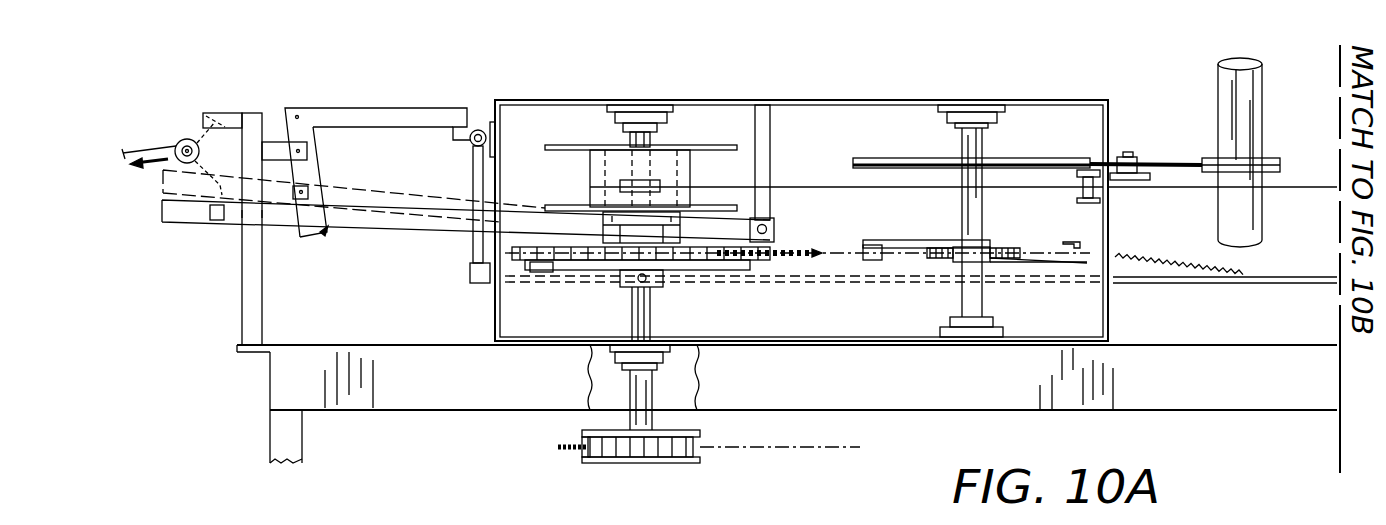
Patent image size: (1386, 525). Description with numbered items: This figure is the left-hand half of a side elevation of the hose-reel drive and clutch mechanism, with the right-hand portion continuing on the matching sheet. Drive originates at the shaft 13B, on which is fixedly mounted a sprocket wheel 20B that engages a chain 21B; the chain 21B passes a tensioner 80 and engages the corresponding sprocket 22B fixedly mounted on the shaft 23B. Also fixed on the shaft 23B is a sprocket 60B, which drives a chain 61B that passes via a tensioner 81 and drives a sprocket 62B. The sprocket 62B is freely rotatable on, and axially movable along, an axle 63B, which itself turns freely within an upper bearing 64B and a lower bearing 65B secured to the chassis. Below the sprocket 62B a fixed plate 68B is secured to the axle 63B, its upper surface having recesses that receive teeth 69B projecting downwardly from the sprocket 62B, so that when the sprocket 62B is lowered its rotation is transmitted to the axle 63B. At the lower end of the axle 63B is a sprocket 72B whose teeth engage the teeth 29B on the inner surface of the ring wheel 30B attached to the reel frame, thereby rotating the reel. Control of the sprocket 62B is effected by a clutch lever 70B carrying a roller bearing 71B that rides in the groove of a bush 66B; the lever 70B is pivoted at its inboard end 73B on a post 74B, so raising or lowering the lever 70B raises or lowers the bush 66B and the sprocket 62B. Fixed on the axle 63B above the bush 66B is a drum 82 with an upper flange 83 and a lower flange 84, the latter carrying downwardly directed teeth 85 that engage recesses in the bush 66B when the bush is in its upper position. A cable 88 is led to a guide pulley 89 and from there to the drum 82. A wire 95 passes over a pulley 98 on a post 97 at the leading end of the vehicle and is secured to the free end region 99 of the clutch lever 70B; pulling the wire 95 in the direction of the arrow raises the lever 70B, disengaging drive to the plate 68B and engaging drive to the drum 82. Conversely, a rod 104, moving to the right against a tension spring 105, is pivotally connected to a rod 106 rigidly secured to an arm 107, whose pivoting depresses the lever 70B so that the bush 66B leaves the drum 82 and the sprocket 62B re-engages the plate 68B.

The shaft 13B is at (1243, 107).
The sprocket wheel 20B is at (1272, 158).
The chain 21B is at (1180, 157).
The sprocket 22B is at (940, 123).
The shaft 23B is at (977, 140).
The teeth 29B is at (583, 452).
The ring wheel 30B is at (563, 435).
The sprocket 60B is at (1047, 243).
The chain 61B is at (812, 258).
The sprocket 62B is at (772, 262).
The axle 63B is at (650, 138).
The upper bearing 64B is at (637, 113).
The lower bearing 65B is at (618, 358).
The bush 66B is at (665, 196).
The fixed plate 68B is at (597, 270).
The teeth 69B is at (532, 274).
The clutch lever 70B is at (368, 223).
The roller bearing 71B is at (668, 271).
The sprocket 72B is at (657, 458).
The inboard end 73B is at (773, 227).
The post 74B is at (770, 132).
The tensioner 80 is at (1127, 155).
The tensioner 81 is at (888, 260).
The drum 82 is at (627, 160).
The upper flange 83 is at (558, 147).
The lower flange 84 is at (568, 205).
The teeth 85 is at (630, 187).
The cable 88 is at (1327, 188).
The guide pulley 89 is at (1080, 192).
The wire 95 is at (160, 141).
The post 97 is at (250, 290).
The pulley 98 is at (183, 140).
The free end region 99 is at (195, 223).
The rod 104 is at (1204, 283).
The tension spring 105 is at (1202, 257).
The rod 106 is at (467, 247).
The arm 107 is at (372, 115).